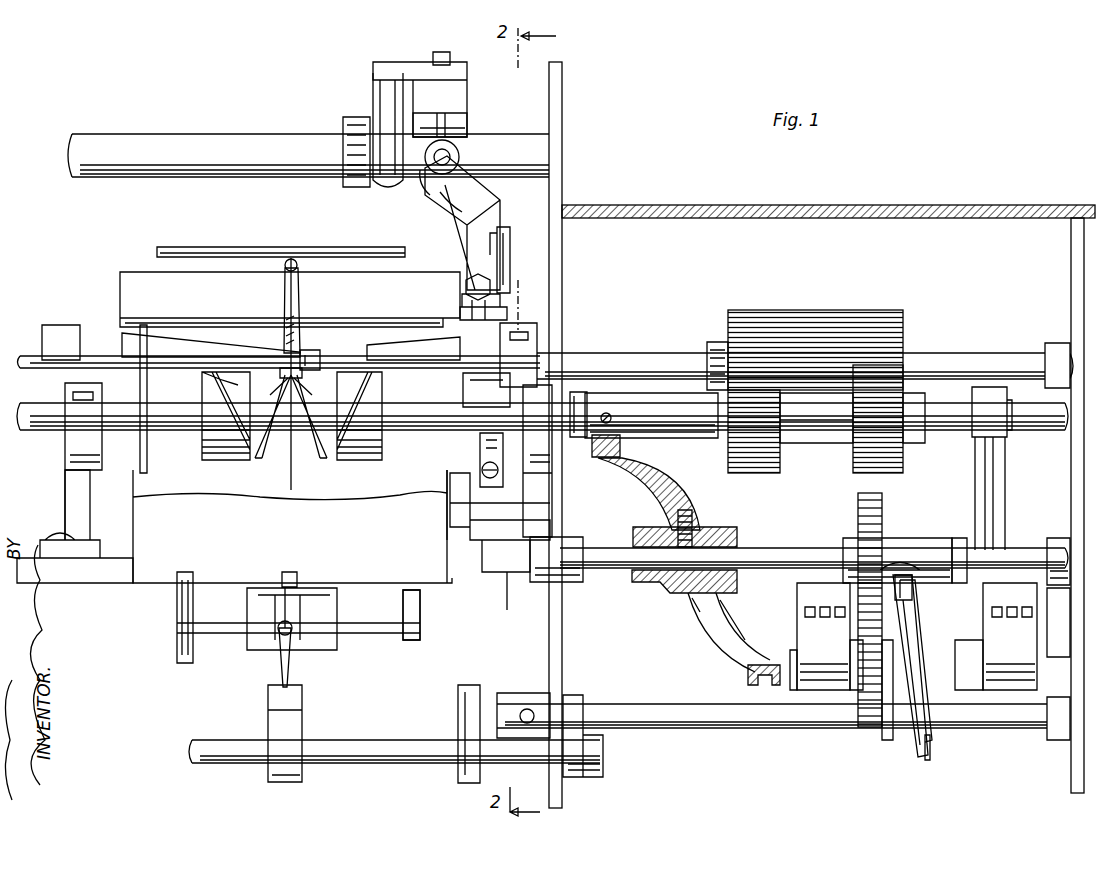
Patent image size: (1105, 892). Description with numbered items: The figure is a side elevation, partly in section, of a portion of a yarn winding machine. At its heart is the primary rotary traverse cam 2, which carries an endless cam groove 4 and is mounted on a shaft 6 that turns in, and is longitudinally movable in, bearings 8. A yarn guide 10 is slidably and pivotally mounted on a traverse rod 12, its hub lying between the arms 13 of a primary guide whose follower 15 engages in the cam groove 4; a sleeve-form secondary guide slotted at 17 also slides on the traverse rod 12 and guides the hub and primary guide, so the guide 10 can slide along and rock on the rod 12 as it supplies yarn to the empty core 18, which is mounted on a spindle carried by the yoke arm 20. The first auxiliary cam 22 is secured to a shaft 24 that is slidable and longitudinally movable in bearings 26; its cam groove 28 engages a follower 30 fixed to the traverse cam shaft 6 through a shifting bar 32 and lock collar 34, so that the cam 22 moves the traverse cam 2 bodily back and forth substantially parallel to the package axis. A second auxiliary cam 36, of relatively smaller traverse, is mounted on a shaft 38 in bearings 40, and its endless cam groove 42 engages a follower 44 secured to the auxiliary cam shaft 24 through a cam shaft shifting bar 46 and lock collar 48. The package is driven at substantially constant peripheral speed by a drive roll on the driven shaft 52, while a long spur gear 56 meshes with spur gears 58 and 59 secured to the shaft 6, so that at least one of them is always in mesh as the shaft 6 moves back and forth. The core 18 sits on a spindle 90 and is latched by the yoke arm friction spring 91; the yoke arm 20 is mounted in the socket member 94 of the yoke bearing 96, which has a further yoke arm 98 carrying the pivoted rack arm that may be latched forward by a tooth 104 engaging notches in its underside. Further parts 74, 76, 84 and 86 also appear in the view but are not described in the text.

The primary rotary traverse cam 2 is at (222, 455).
The endless cam groove 4 is at (352, 412).
The shaft 6 is at (400, 425).
The bearings 8 is at (90, 405).
The yarn guide 10 is at (300, 290).
The traverse rod 12 is at (358, 352).
The arms 13 is at (282, 378).
The follower 15 is at (300, 385).
The slot 17 is at (315, 358).
The empty core 18 is at (135, 272).
The yoke arm 20 is at (488, 222).
The first auxiliary cam 22 is at (635, 490).
The shaft 24 is at (782, 548).
The bearings 26 is at (580, 538).
The cam groove 28 is at (758, 680).
The follower 30 is at (595, 452).
The shifting bar 32 is at (657, 395).
The lock collar 34 is at (583, 395).
The second auxiliary cam 36 is at (932, 744).
The shaft 38 is at (793, 665).
The bearings 40 is at (797, 598).
The endless cam groove 42 is at (912, 760).
The follower 44 is at (915, 585).
The cam shaft shifting bar 46 is at (898, 548).
The lock collar 48 is at (960, 540).
The driven shaft 52 is at (641, 355).
The long spur gear 56 is at (850, 295).
The spur gear 58 is at (765, 472).
The spur gear 59 is at (865, 455).
The gear 74 is at (868, 493).
The gear 76 is at (868, 735).
The wedge 84 is at (413, 349).
The wedge arm 86 is at (208, 350).
The spindle 90 is at (462, 300).
The yoke arm friction spring 91 is at (508, 268).
The socket member 94 is at (455, 127).
The yoke bearing 96 is at (450, 96).
The yoke arm 98 is at (470, 240).
The tooth 104 is at (480, 462).